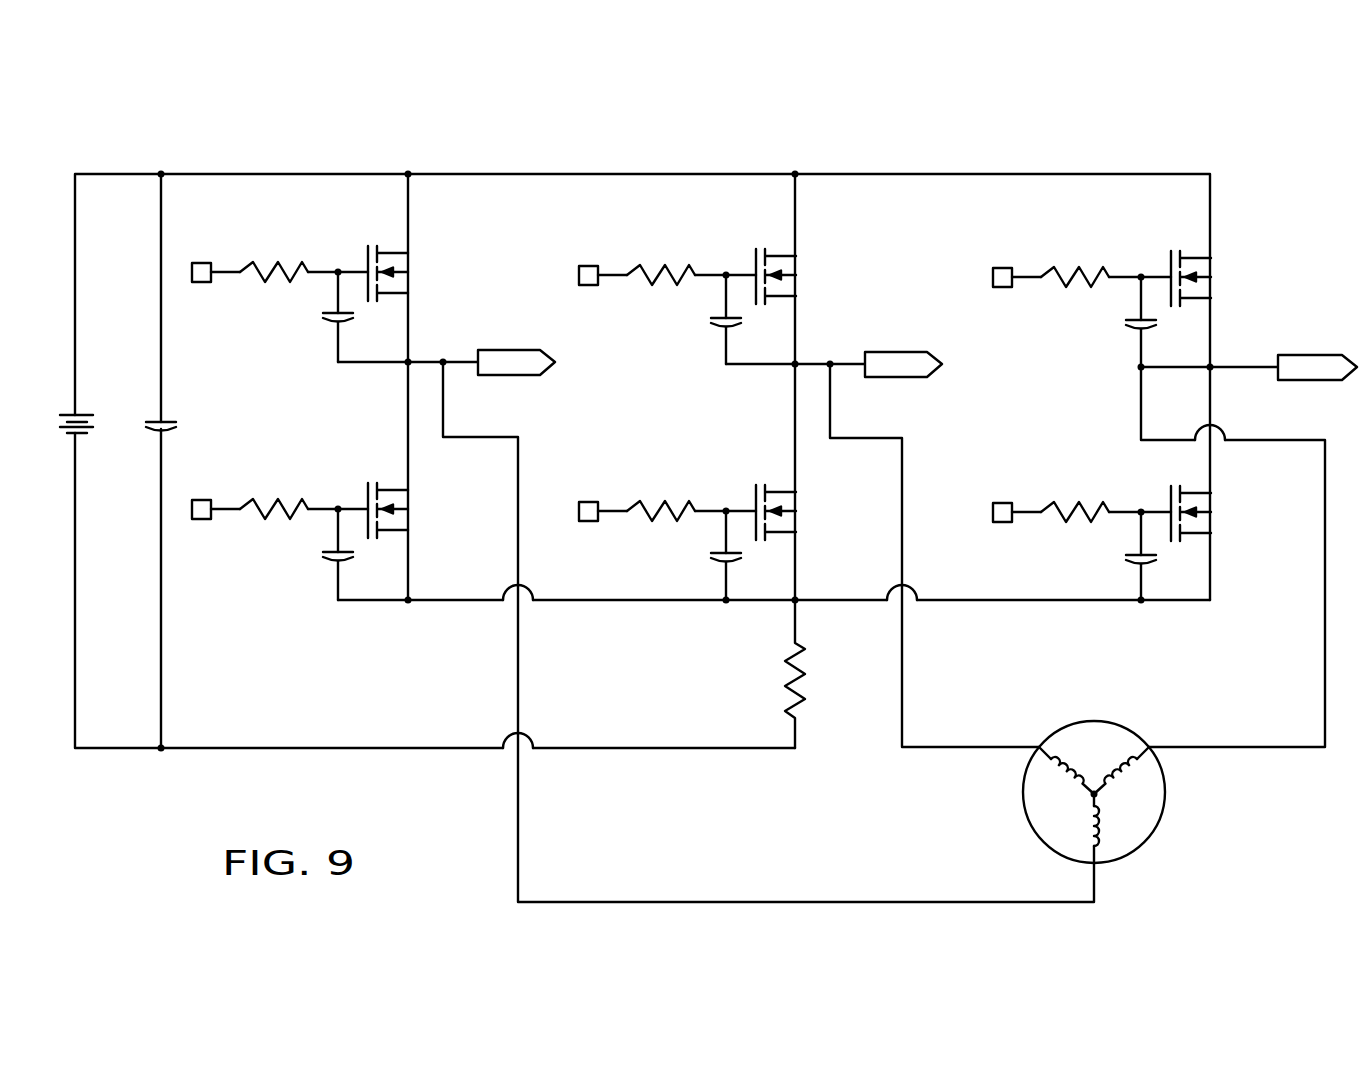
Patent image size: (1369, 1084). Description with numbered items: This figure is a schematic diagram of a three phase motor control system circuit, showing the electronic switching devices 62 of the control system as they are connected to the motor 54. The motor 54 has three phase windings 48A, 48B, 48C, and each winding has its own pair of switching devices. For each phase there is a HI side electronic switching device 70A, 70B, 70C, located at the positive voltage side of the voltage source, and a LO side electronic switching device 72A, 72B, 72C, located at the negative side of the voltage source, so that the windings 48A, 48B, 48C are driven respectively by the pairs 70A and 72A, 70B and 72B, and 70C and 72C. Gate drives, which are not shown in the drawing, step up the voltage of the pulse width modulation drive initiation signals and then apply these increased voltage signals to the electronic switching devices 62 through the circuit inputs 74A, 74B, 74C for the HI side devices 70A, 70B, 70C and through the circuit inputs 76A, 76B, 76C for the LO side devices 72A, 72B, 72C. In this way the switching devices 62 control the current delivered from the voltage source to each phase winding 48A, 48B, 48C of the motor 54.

The electronic switching devices 62 is at (1200, 155).
The HI side electronic switching device 70A is at (407, 266).
The HI side electronic switching device 70B is at (795, 268).
The HI side electronic switching device 70C is at (1210, 271).
The LO side electronic switching device 72A is at (409, 503).
The LO side electronic switching device 72B is at (796, 503).
The LO side electronic switching device 72C is at (1212, 505).
The circuit input 74A is at (207, 263).
The circuit input 74B is at (593, 266).
The circuit input 74C is at (1006, 268).
The circuit input 76A is at (207, 500).
The circuit input 76B is at (594, 502).
The circuit input 76C is at (1008, 503).
The phase winding 48A is at (1097, 838).
The phase winding 48B is at (1024, 796).
The phase winding 48C is at (1165, 797).
The motor 54 is at (1155, 832).